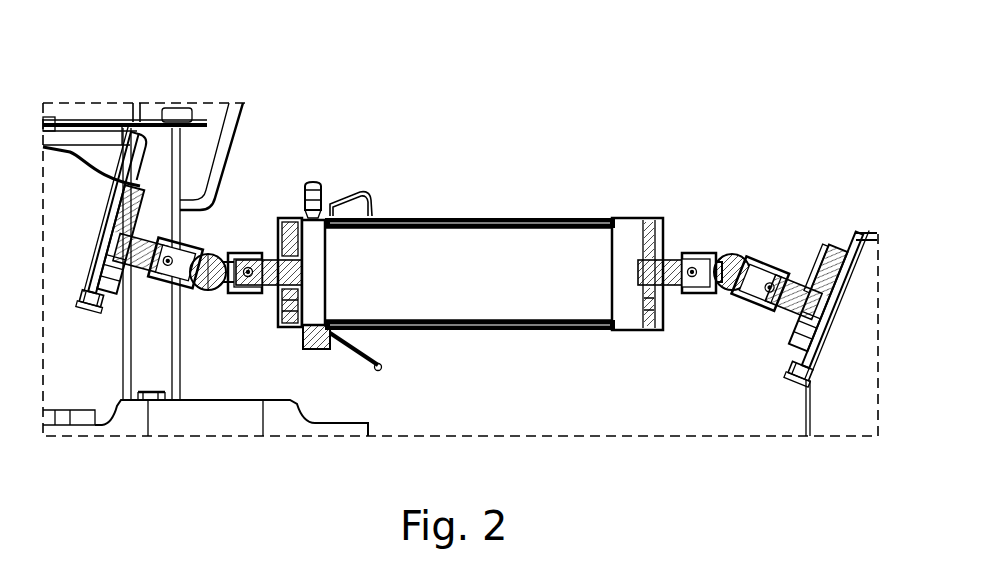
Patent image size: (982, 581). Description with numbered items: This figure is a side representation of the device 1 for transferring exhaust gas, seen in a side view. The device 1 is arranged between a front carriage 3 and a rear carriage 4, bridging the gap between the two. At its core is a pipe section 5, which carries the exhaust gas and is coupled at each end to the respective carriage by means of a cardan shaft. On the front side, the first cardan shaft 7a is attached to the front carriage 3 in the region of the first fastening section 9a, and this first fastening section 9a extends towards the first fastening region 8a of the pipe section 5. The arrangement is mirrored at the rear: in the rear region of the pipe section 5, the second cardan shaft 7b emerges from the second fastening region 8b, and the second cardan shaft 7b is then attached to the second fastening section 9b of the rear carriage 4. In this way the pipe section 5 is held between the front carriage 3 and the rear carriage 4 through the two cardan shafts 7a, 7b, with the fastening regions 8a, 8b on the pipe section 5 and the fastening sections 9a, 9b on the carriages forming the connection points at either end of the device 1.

The device for transferring exhaust gas 1 is at (650, 120).
The front carriage 3 is at (198, 82).
The rear carriage 4 is at (876, 182).
The pipe section 5 is at (481, 216).
The first cardan shaft 7a is at (215, 262).
The second cardan shaft 7b is at (743, 262).
The first fastening region 8a is at (281, 326).
The second fastening region 8b is at (652, 218).
The first fastening section 9a is at (109, 298).
The second fastening section 9b is at (788, 351).